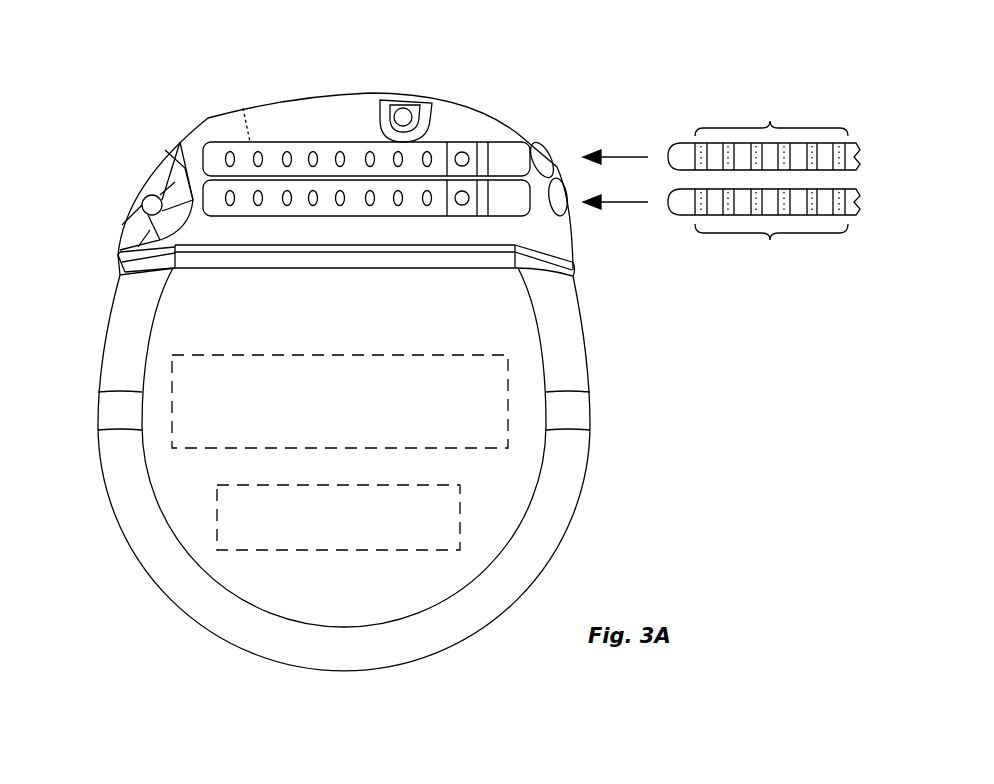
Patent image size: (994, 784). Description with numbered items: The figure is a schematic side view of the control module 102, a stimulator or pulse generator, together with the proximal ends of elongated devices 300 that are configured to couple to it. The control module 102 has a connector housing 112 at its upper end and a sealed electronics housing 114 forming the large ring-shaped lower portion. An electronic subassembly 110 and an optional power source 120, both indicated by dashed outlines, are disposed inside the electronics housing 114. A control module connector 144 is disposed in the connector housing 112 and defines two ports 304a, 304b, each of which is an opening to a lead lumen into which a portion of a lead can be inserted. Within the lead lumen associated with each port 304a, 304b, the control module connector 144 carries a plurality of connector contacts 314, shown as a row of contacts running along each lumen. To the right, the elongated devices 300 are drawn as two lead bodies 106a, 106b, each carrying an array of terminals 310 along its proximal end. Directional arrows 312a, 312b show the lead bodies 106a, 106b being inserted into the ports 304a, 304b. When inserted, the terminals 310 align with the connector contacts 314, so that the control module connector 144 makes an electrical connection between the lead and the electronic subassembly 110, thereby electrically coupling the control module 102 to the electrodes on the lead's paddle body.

The control module 102 is at (152, 133).
The connector housing 112 is at (317, 103).
The connector contact 314 is at (230, 152).
The control module connector 144 is at (437, 142).
The port 304a is at (546, 140).
The port 304b is at (574, 215).
The sealed electronics housing 114 is at (170, 328).
The electronic subassembly 110 is at (188, 407).
The power source 120 is at (235, 523).
The elongated device 300 is at (806, 95).
The lead body 106a is at (680, 141).
The lead body 106b is at (678, 217).
The terminals 310 is at (771, 178).
The directional arrow 312a is at (622, 156).
The directional arrow 312b is at (630, 204).